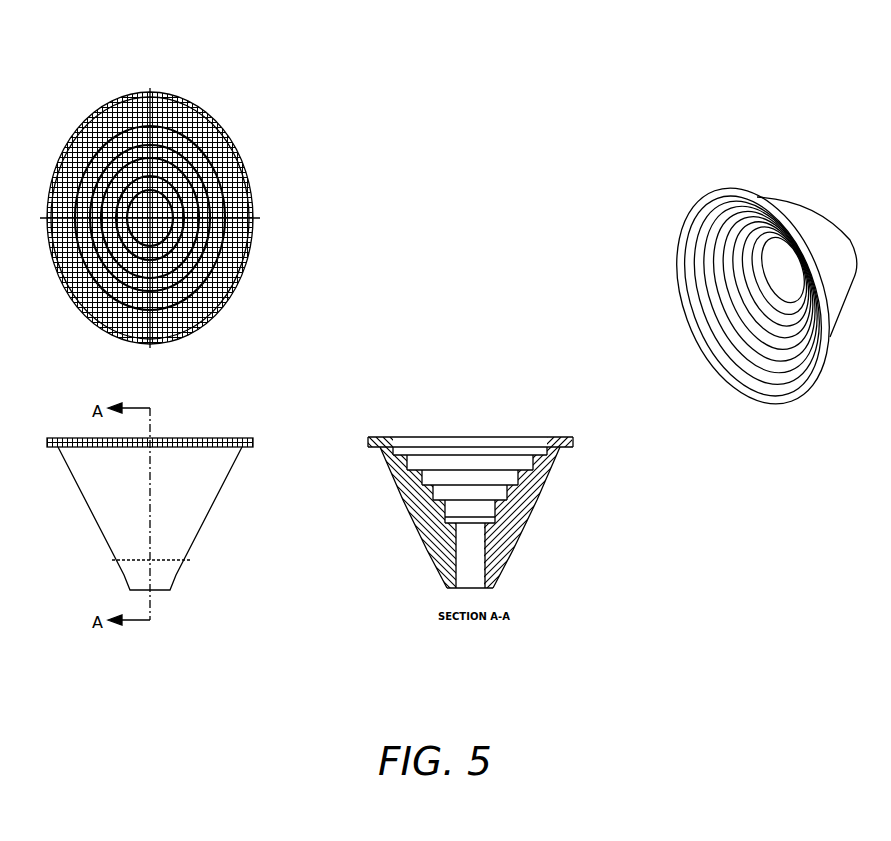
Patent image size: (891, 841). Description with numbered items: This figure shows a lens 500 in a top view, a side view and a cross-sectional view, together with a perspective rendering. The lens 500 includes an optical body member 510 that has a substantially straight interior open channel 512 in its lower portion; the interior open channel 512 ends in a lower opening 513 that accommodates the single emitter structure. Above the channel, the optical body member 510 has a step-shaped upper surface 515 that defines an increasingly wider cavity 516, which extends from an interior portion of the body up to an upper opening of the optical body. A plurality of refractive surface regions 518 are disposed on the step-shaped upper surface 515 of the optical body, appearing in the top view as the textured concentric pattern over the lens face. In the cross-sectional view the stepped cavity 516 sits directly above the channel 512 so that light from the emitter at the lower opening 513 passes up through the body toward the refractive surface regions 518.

The lens 500 is at (478, 108).
The refractive surface regions 518 is at (240, 163).
The cavity 516 is at (497, 485).
The step-shaped upper surface 515 is at (523, 468).
The optical body member 510 is at (537, 517).
The lower opening 513 is at (460, 588).
The interior open channel 512 is at (467, 583).